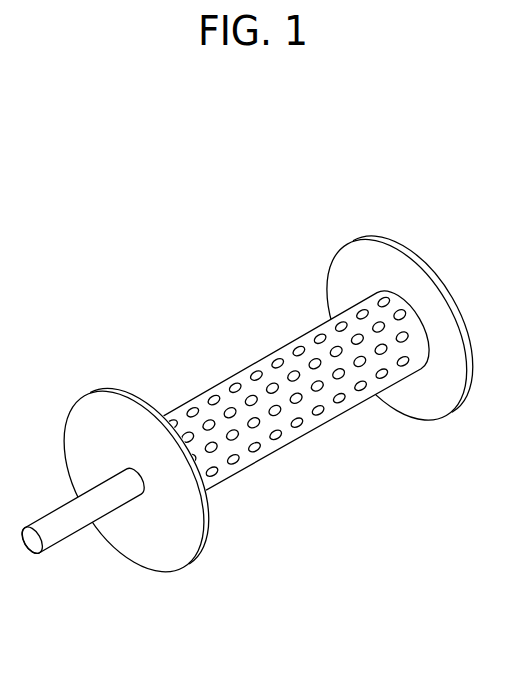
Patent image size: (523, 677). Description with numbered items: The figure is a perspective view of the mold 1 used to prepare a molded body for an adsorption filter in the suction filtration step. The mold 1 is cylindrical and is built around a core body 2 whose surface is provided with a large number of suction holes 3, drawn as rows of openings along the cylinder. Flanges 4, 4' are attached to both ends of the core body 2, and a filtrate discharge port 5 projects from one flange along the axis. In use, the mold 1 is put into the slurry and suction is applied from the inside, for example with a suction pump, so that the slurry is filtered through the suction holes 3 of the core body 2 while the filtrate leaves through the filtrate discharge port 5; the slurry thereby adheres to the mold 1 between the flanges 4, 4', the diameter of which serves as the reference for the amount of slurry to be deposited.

The mold for preparing molded body 1 is at (243, 345).
The core body 2 is at (272, 453).
The suction hole 3 is at (340, 402).
The flange 4 is at (137, 449).
The flange 4' is at (400, 294).
The filtrate discharge port 5 is at (25, 553).